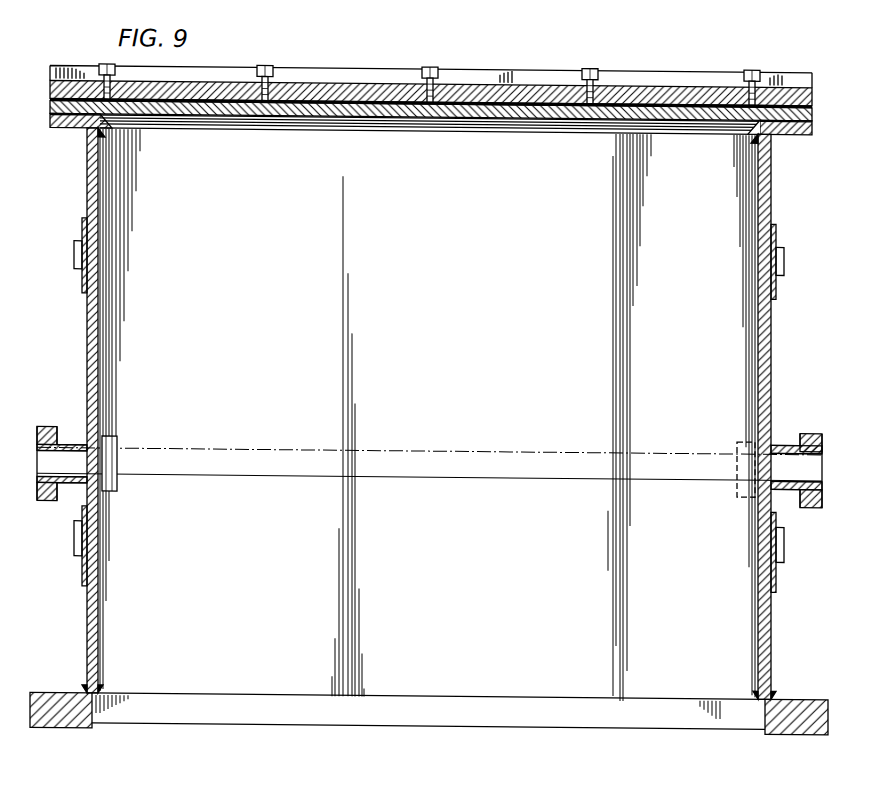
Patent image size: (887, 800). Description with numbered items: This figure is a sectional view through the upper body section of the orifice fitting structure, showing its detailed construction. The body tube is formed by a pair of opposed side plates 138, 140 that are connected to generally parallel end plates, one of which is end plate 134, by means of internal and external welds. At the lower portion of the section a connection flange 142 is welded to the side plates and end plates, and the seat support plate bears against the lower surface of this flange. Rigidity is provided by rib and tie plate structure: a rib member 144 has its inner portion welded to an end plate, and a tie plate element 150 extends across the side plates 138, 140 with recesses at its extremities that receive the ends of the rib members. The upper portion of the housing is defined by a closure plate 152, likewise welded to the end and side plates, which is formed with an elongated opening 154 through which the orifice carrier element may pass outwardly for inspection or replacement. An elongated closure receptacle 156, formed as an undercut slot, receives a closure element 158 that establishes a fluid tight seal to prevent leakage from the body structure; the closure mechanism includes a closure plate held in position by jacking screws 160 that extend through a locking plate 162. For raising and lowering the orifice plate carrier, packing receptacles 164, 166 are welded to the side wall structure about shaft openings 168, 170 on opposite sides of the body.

The end plate 134 is at (443, 292).
The side plate 138 is at (86, 612).
The side plate 140 is at (771, 621).
The connection flange 142 is at (55, 691).
The rib member 144 is at (76, 256).
The tie plate element 150 is at (84, 222).
The closure plate 152 is at (515, 71).
The elongated opening 154 is at (538, 113).
The closure receptacle 156 is at (642, 82).
The gasket layer 158 is at (405, 111).
The jacking screw 160 is at (432, 58).
The locking plate 162 is at (355, 84).
The packing receptacle 164 is at (87, 400).
The packing receptacle 166 is at (790, 434).
The shaft opening 168 is at (117, 455).
The shaft opening 170 is at (752, 461).